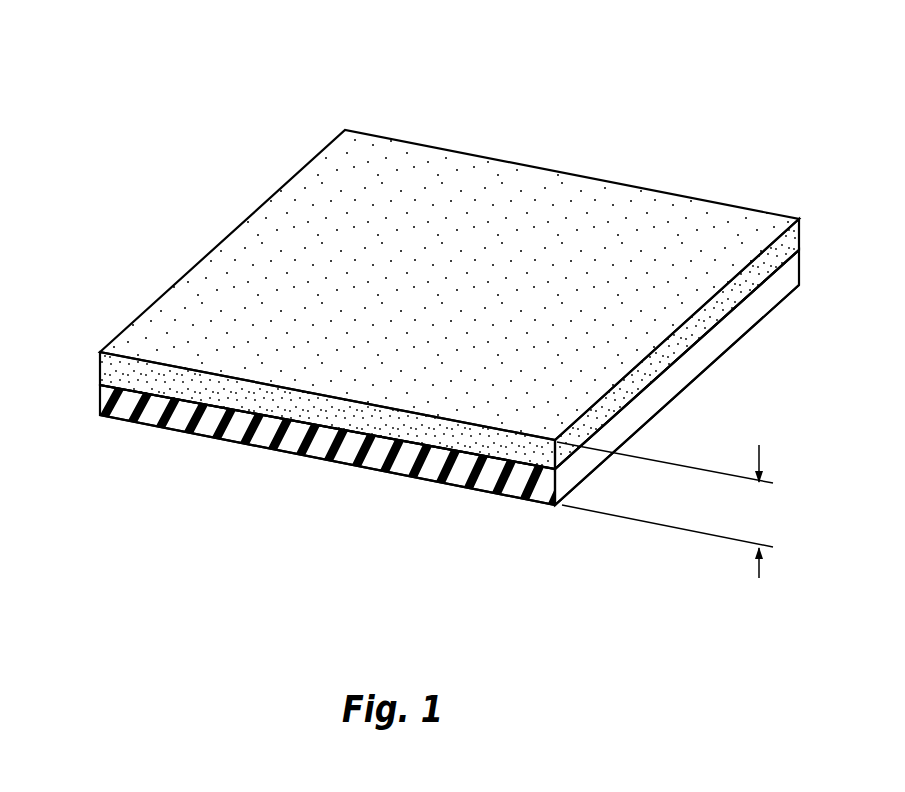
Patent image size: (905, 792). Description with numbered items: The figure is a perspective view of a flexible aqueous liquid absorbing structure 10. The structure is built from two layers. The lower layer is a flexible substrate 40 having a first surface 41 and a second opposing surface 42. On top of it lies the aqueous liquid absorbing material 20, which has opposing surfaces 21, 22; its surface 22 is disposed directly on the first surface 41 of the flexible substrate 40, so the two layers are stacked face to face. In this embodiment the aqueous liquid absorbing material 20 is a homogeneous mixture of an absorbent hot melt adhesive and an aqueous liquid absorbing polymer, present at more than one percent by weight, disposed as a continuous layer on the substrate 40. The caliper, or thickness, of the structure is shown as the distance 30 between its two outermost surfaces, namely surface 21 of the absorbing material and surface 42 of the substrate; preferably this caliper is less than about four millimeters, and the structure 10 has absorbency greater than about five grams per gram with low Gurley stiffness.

The flexible aqueous liquid absorbing structure 10 is at (212, 92).
The aqueous liquid absorbing material 20 is at (100, 370).
The surface of aqueous liquid absorbing material 21 is at (117, 352).
The surface of aqueous liquid absorbing material 22 is at (100, 392).
The distance 30 is at (758, 512).
The flexible substrate 40 is at (100, 403).
The first surface 41 is at (137, 384).
The second opposing surface 42 is at (155, 425).